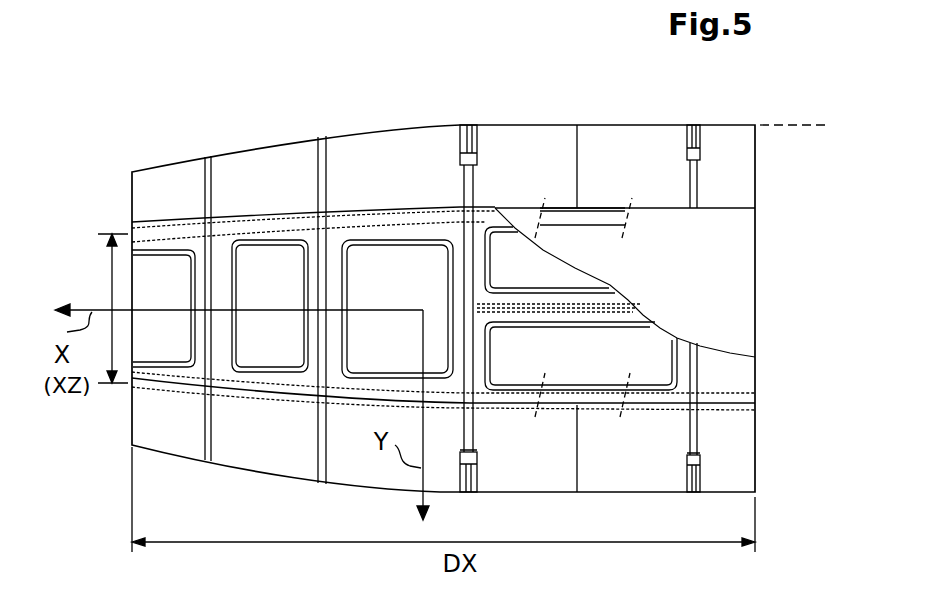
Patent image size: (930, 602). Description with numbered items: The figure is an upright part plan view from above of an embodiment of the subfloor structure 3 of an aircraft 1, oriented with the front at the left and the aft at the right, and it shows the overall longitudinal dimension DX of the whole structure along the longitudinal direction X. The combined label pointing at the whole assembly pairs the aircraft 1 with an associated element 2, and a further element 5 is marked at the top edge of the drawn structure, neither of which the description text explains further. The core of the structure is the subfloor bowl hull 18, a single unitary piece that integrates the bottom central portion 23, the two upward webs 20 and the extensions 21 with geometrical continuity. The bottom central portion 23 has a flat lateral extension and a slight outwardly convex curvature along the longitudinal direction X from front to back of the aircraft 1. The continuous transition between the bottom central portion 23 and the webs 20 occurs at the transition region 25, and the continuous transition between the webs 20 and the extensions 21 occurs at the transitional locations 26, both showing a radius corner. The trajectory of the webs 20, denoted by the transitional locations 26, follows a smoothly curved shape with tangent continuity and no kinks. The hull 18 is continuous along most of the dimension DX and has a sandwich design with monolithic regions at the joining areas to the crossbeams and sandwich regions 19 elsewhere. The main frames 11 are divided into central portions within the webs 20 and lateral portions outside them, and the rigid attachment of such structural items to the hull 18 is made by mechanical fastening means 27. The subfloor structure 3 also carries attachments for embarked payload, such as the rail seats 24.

The aircraft 1 is at (454, 329).
The fuselage 2 is at (454, 329).
The subfloor structure 3 is at (80, 232).
The longitudinal section line 5 is at (787, 124).
The main frame 11 is at (478, 478).
The subfloor bowl hull 18 is at (103, 416).
The sandwich region 19 is at (400, 290).
The web 20 is at (273, 202).
The extension 21 is at (393, 150).
The bottom central portion 23 is at (112, 288).
The rail seat 24 is at (603, 207).
The transition region 25 is at (498, 341).
The transitional location 26 is at (778, 208).
The mechanical fastening means 27 is at (203, 228).